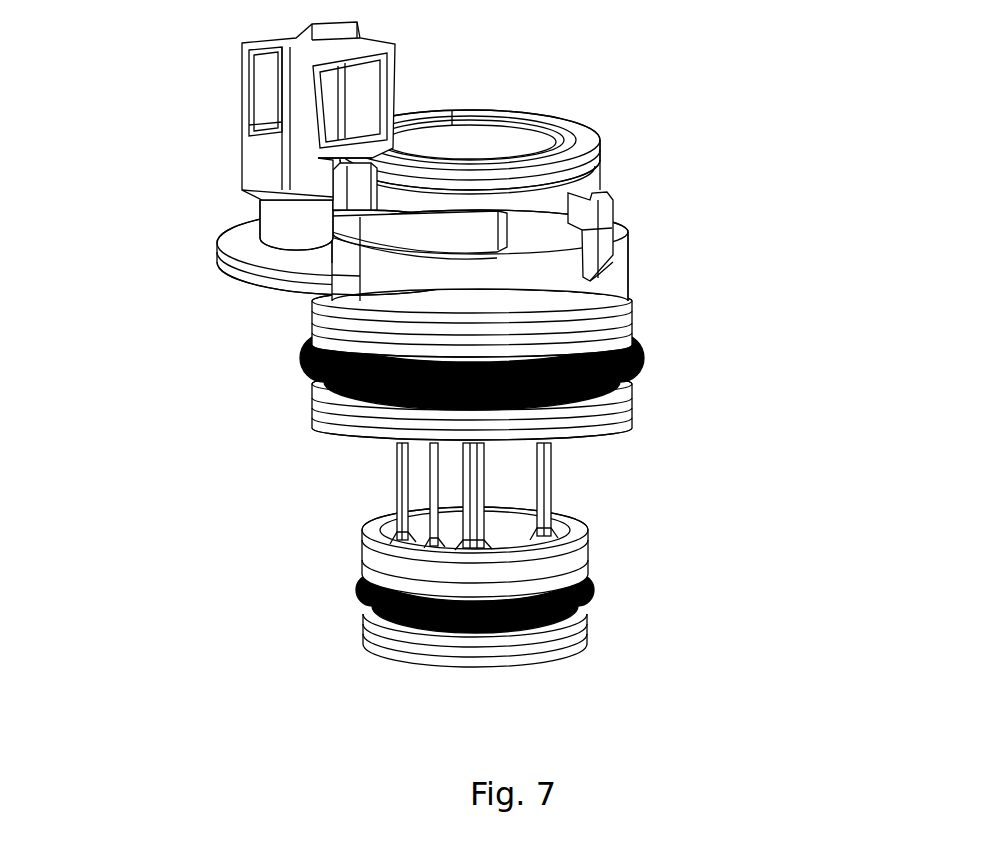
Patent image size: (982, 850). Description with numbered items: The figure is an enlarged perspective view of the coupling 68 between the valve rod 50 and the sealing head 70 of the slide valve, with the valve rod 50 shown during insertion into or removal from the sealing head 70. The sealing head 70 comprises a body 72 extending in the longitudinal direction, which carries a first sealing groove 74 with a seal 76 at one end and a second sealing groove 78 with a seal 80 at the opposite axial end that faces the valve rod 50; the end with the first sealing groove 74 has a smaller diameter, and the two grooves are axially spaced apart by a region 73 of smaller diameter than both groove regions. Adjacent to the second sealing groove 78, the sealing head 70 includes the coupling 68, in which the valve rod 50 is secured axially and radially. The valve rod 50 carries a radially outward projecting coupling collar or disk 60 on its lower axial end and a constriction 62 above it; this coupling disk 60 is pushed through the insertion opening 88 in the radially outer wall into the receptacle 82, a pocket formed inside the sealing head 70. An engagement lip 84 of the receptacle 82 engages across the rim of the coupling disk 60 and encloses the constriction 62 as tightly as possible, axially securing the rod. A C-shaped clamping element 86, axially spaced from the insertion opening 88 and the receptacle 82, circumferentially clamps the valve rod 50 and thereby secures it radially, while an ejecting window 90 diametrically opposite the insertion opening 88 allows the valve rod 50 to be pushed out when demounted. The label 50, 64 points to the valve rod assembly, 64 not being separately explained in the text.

The valve rod 50 is at (255, 105).
The actuating post 64 is at (238, 105).
The C-shaped clamping element 86 is at (442, 110).
The coupling 68 is at (424, 198).
The constriction 62 is at (278, 224).
The coupling collar or disk 60 is at (220, 258).
The ejecting window 90 is at (585, 242).
The engagement lip 84 is at (405, 233).
The insertion opening 88 is at (297, 289).
The receptacle 82 is at (348, 268).
The seal 80 is at (481, 366).
The sealing groove 78 is at (633, 396).
The region 73 is at (396, 490).
The body 72 is at (532, 504).
The sealing head 70 is at (480, 561).
The seal 76 is at (465, 593).
The sealing groove 74 is at (592, 606).